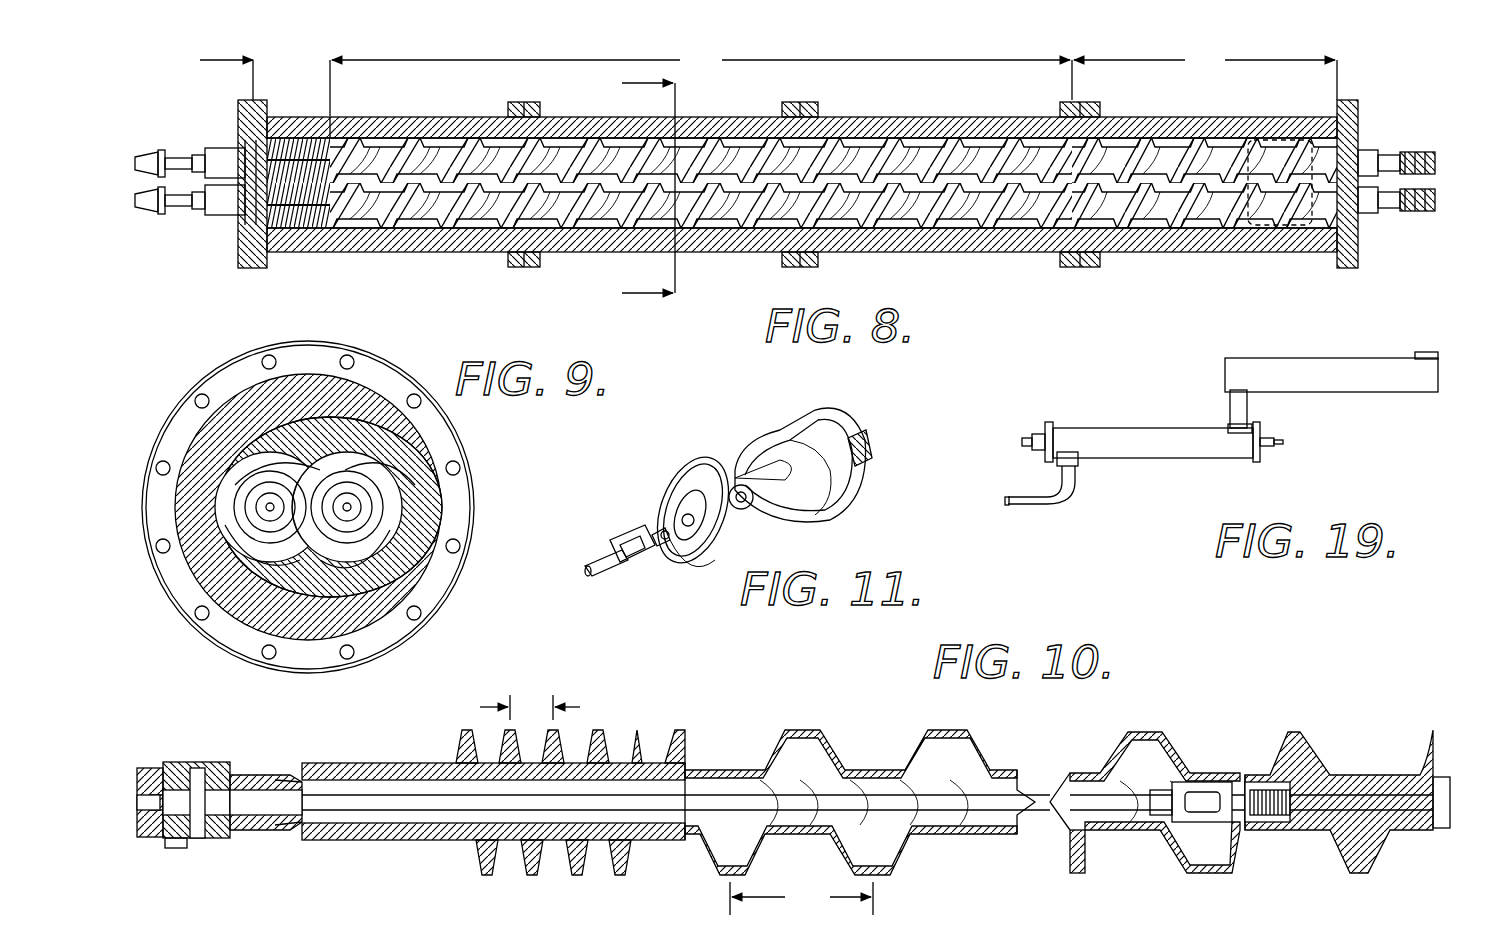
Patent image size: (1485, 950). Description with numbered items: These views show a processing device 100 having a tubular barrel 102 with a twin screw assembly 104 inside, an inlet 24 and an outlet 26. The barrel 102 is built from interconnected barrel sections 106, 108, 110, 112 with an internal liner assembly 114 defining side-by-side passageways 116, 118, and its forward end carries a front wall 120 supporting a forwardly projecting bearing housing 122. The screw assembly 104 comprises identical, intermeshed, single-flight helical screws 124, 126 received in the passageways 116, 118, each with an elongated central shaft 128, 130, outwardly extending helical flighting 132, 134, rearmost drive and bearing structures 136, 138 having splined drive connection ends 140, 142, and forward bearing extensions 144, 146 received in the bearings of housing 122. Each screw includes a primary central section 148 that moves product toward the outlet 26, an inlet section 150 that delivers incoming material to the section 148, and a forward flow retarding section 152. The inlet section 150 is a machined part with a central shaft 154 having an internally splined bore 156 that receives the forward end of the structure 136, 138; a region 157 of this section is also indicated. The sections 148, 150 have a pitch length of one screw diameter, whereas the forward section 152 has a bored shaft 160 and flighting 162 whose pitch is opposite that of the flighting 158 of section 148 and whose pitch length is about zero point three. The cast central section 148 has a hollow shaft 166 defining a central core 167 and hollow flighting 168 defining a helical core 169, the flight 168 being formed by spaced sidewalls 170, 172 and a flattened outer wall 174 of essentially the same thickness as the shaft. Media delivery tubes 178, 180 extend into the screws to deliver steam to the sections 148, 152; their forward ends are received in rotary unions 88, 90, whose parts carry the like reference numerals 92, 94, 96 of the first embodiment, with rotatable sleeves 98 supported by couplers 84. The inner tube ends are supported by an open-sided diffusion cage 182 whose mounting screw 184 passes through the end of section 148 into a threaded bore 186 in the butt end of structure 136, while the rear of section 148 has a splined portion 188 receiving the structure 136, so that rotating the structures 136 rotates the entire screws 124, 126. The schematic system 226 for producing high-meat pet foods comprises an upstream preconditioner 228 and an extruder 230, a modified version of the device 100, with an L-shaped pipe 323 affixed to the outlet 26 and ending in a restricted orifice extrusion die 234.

In FIG. 8, the inlet 24 is at (1275, 118).
In FIG. 19, the inlet 24 is at (1232, 420).
In FIG. 8, the outlet 26 is at (342, 138).
In FIG. 19, the outlet 26 is at (1078, 468).
In FIG. 10, the coupler 84 is at (280, 830).
In FIG. 8, the rotary union 88 is at (145, 230).
In FIG. 10, the rotary union 88 is at (150, 760).
In FIG. 8, the rotary union 90 is at (145, 130).
In FIG. 10, the end cap 92 is at (143, 838).
In FIG. 10, the bore 94 is at (145, 800).
In FIG. 10, the nut 96 is at (195, 848).
In FIG. 10, the rotatable sleeve 98 is at (265, 785).
In FIG. 8, the processing device 100 is at (1362, 88).
In FIG. 9, the processing device 100 is at (405, 352).
In FIG. 8, the tubular barrel 102 is at (1232, 105).
In FIG. 9, the tubular barrel 102 is at (472, 590).
In FIG. 8, the twin screw assembly 104 is at (845, 130).
In FIG. 9, the twin screw assembly 104 is at (210, 508).
In FIG. 8, the barrel section 106 is at (1215, 240).
In FIG. 8, the barrel section 108 is at (1000, 248).
In FIG. 8, the barrel section 110 is at (750, 245).
In FIG. 9, the barrel section 110 is at (232, 385).
In FIG. 8, the barrel section 112 is at (412, 245).
In FIG. 8, the internal liner assembly 114 is at (875, 235).
In FIG. 9, the internal liner assembly 114 is at (312, 420).
In FIG. 8, the passageway 116 is at (595, 240).
In FIG. 9, the passageway 116 is at (385, 545).
In FIG. 8, the passageway 118 is at (748, 145).
In FIG. 9, the passageway 118 is at (255, 540).
In FIG. 8, the front wall 120 is at (250, 268).
In FIG. 8, the bearing housing 122 is at (208, 212).
In FIG. 8, the helical screw 124 is at (1030, 225).
In FIG. 9, the helical screw 124 is at (375, 450).
In FIG. 8, the helical screw 126 is at (950, 135).
In FIG. 9, the helical screw 126 is at (225, 470).
In FIG. 8, the central shaft 128 is at (510, 235).
In FIG. 10, the central shaft 128 is at (665, 840).
In FIG. 8, the central shaft 130 is at (565, 140).
In FIG. 8, the helical flighting 132 is at (688, 228).
In FIG. 10, the helical flighting 132 is at (1160, 718).
In FIG. 8, the helical flighting 134 is at (758, 128).
In FIG. 8, the drive and bearing structure 136 is at (1366, 210).
In FIG. 11, the drive and bearing structure 136 is at (868, 445).
In FIG. 10, the drive and bearing structure 136 is at (1445, 810).
In FIG. 8, the drive and bearing structure 138 is at (1366, 155).
In FIG. 8, the splined drive connection end 140 is at (1420, 212).
In FIG. 8, the splined drive connection end 142 is at (1420, 152).
In FIG. 8, the bearing extension 144 is at (232, 205).
In FIG. 10, the bearing extension 144 is at (380, 765).
In FIG. 8, the bearing extension 146 is at (230, 155).
In FIG. 8, the primary central section 148 is at (701, 138).
In FIG. 11, the primary central section 148 is at (688, 462).
In FIG. 10, the primary central section 148 is at (855, 690).
In FIG. 8, the inlet section 150 is at (1204, 138).
In FIG. 10, the inlet section 150 is at (1375, 700).
In FIG. 8, the material flow retarding section 152 is at (265, 82).
In FIG. 10, the material flow retarding section 152 is at (610, 672).
In FIG. 11, the central shaft 154 is at (782, 458).
In FIG. 10, the central shaft 154 is at (1372, 775).
In FIG. 10, the internally splined bore 156 is at (1395, 845).
In FIG. 10, the flight surface 157 is at (1350, 888).
In FIG. 11, the flighting 158 is at (822, 510).
In FIG. 10, the flighting 158 is at (1425, 742).
In FIG. 10, the bored shaft 160 is at (560, 842).
In FIG. 8, the helical flighting 162 is at (300, 252).
In FIG. 10, the helical flighting 162 is at (460, 748).
In FIG. 10, the central shaft 166 is at (940, 832).
In FIG. 10, the central core 167 is at (960, 835).
In FIG. 11, the flighting 168 is at (725, 555).
In FIG. 10, the flighting 168 is at (1085, 845).
In FIG. 10, the helical core 169 is at (790, 752).
In FIG. 10, the sidewall 170 is at (970, 752).
In FIG. 10, the sidewall 172 is at (928, 755).
In FIG. 10, the flattened outer wall 174 is at (945, 740).
In FIG. 9, the media delivery tube 178 is at (355, 505).
In FIG. 11, the media delivery tube 178 is at (595, 552).
In FIG. 10, the media delivery tube 178 is at (445, 803).
In FIG. 9, the media delivery tube 180 is at (262, 505).
In FIG. 11, the diffusion cage 182 is at (625, 530).
In FIG. 10, the diffusion cage 182 is at (1200, 785).
In FIG. 11, the mounting screw 184 is at (655, 525).
In FIG. 10, the mounting screw 184 is at (1265, 790).
In FIG. 11, the threaded bore 186 is at (740, 510).
In FIG. 10, the threaded bore 186 is at (1270, 822).
In FIG. 10, the splined portion 188 is at (1305, 765).
In FIG. 19, the system 226 is at (1178, 382).
In FIG. 19, the preconditioner 228 is at (1318, 358).
In FIG. 19, the extruder 230 is at (1078, 430).
In FIG. 19, the restricted orifice extrusion die 234 is at (1005, 500).
In FIG. 19, the pipe 323 is at (1062, 505).